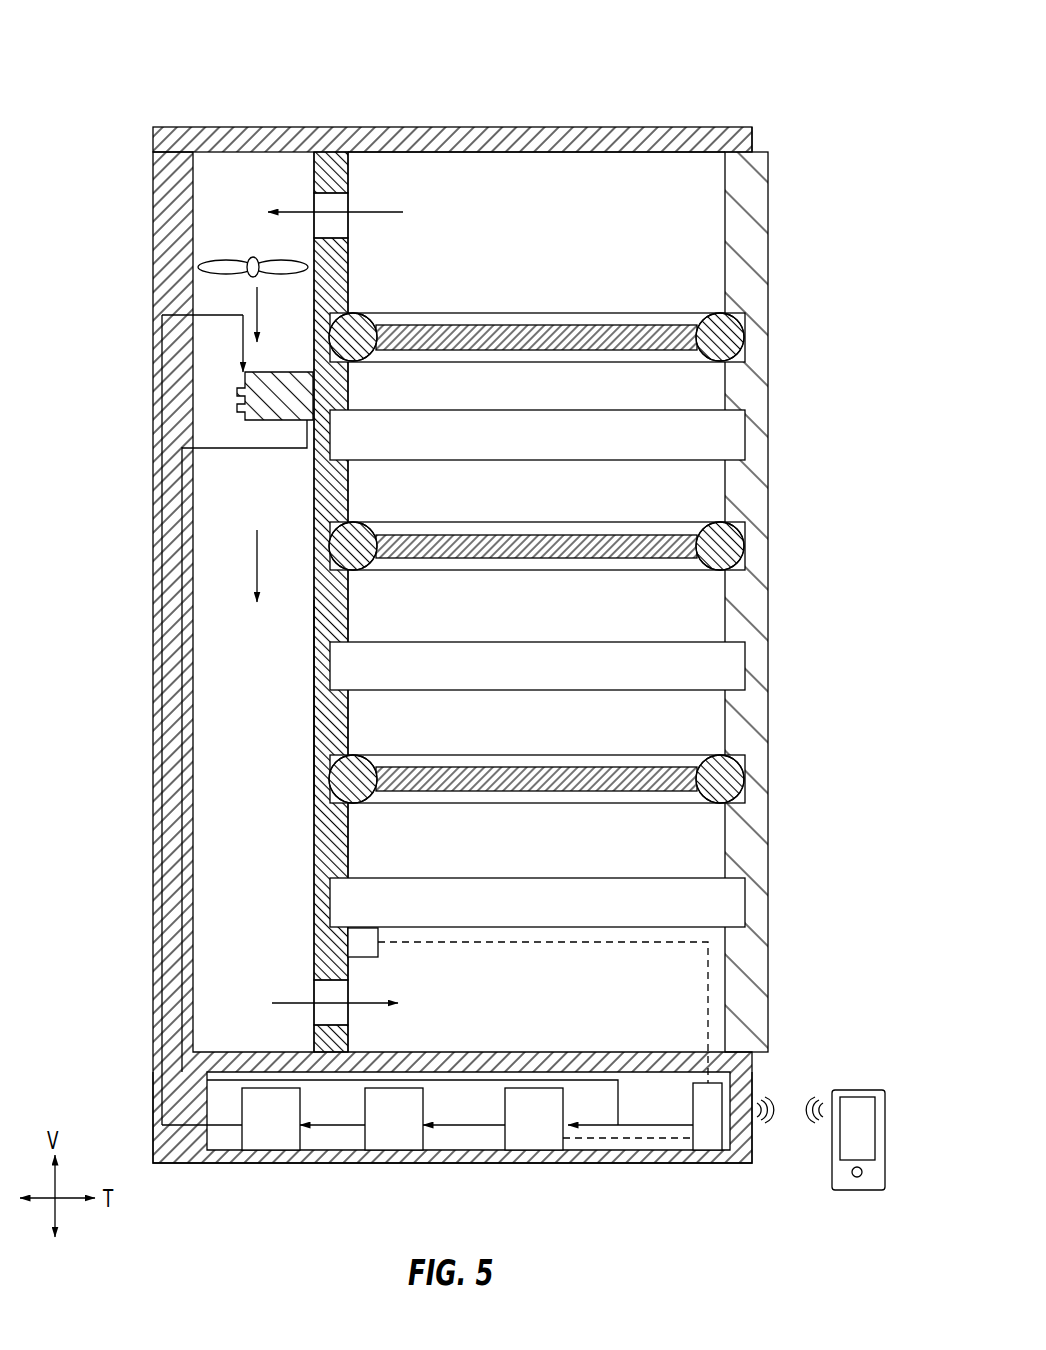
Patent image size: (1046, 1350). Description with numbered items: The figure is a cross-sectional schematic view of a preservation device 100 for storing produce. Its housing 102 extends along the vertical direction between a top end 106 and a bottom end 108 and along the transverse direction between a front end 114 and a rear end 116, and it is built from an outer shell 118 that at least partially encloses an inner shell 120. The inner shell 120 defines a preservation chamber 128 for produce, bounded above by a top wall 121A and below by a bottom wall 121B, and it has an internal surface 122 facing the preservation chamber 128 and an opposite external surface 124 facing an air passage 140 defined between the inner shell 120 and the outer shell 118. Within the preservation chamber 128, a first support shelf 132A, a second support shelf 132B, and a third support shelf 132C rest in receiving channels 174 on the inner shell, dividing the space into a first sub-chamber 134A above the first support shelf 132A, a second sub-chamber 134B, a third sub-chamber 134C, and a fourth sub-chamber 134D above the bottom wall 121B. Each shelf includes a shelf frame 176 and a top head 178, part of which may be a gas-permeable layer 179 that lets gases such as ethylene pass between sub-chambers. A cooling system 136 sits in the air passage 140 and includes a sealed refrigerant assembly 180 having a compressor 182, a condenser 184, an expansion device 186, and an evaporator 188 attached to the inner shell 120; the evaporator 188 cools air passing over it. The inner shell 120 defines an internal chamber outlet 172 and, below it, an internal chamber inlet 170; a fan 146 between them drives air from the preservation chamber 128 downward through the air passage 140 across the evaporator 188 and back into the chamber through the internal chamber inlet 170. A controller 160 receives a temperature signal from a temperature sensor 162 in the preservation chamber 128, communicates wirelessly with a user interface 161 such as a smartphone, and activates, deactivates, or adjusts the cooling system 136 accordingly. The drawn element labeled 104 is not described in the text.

The preservation device 100 is at (786, 76).
The housing 102 is at (463, 789).
The door 104 is at (750, 213).
The top end 106 is at (674, 126).
The bottom end 108 is at (463, 1167).
The front end 114 is at (754, 139).
The rear end 116 is at (454, 673).
The outer shell 118 is at (161, 160).
The inner shell 120 is at (338, 185).
The top wall 121A is at (563, 158).
The bottom wall 121B is at (658, 1051).
The internal surface 122 is at (312, 559).
The external surface 124 is at (309, 705).
The preservation chamber 128 is at (553, 254).
The first support shelf 132A is at (721, 339).
The second support shelf 132B is at (588, 545).
The third support shelf 132C is at (722, 779).
The first sub-chamber 134A is at (692, 252).
The second sub-chamber 134B is at (692, 488).
The third sub-chamber 134C is at (692, 721).
The fourth sub-chamber 134D is at (692, 846).
The cooling system 136 is at (272, 465).
The air passage 140 is at (265, 789).
The fan 146 is at (222, 274).
The controller 160 is at (708, 1140).
The user interface 161 is at (857, 1090).
The temperature sensor 162 is at (363, 946).
The internal chamber inlet 170 is at (329, 1015).
The internal chamber outlet 172 is at (341, 225).
The receiving channel 174 is at (594, 313).
The shelf frame 176 is at (358, 530).
The top head 178 is at (438, 530).
The gas-permeable layer 179 is at (462, 559).
The sealed refrigerant assembly 180 is at (490, 1171).
The compressor 182 is at (533, 1130).
The condenser 184 is at (388, 1130).
The expansion device 186 is at (272, 1130).
The evaporator 188 is at (237, 396).